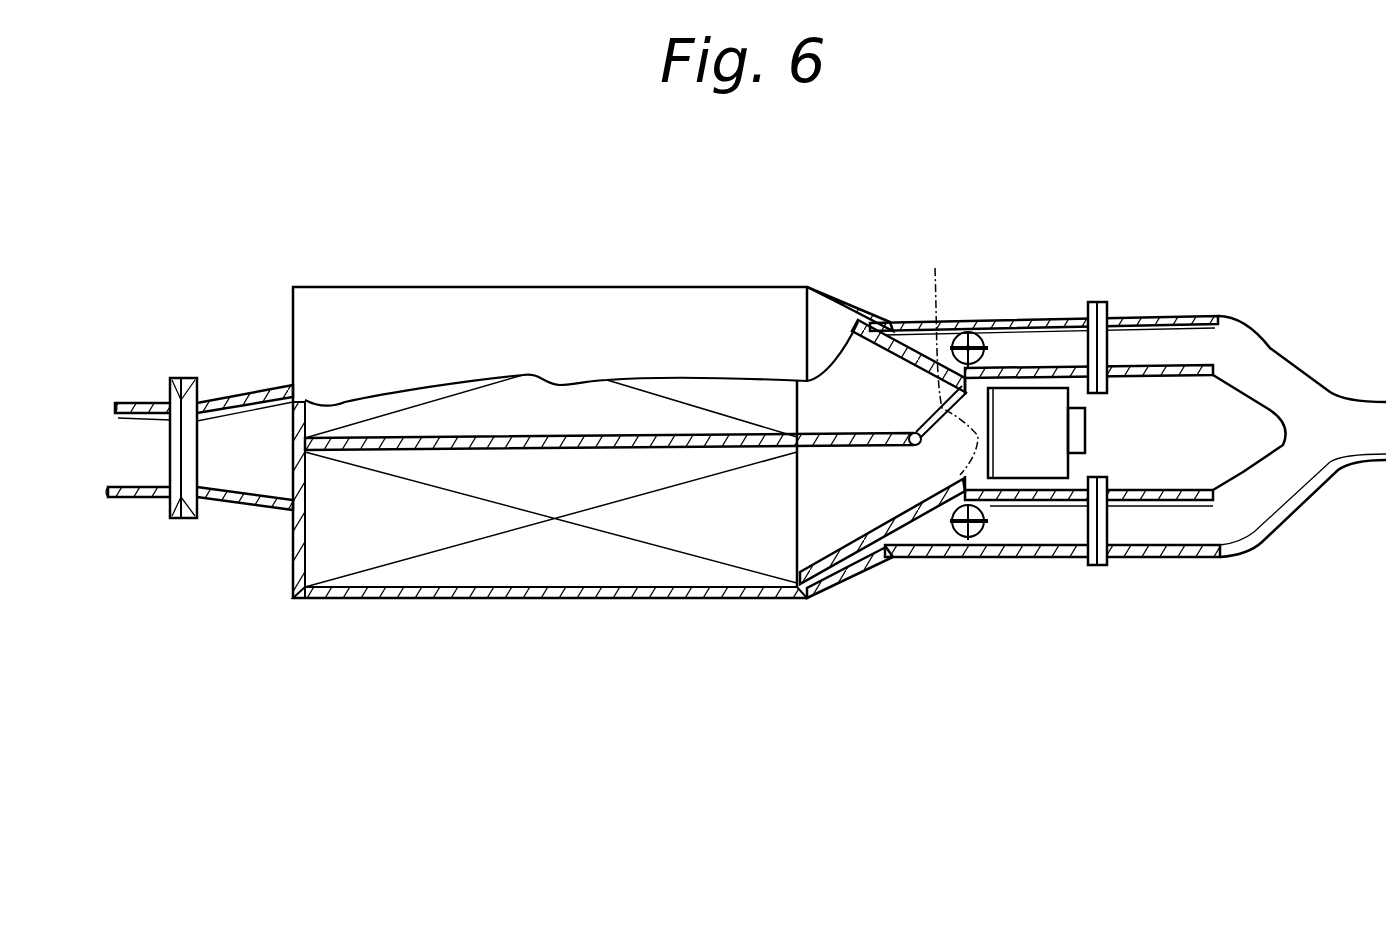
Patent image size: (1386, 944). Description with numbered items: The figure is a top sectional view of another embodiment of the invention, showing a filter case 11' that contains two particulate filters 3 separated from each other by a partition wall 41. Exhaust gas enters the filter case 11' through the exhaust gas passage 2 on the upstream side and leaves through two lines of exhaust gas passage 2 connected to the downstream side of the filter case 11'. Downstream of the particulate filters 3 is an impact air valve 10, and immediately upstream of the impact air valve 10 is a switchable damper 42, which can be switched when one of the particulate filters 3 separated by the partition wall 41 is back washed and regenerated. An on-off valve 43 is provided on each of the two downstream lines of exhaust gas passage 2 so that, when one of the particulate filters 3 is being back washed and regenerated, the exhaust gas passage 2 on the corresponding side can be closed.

The exhaust gas passage 2 is at (148, 386).
The particulate filter 3 is at (548, 405).
The impact air valve 10 is at (1106, 421).
The filter case 11' is at (629, 380).
The partition wall 41 is at (420, 437).
The switchable damper 42 is at (962, 485).
The on-off valve 43 is at (986, 328).